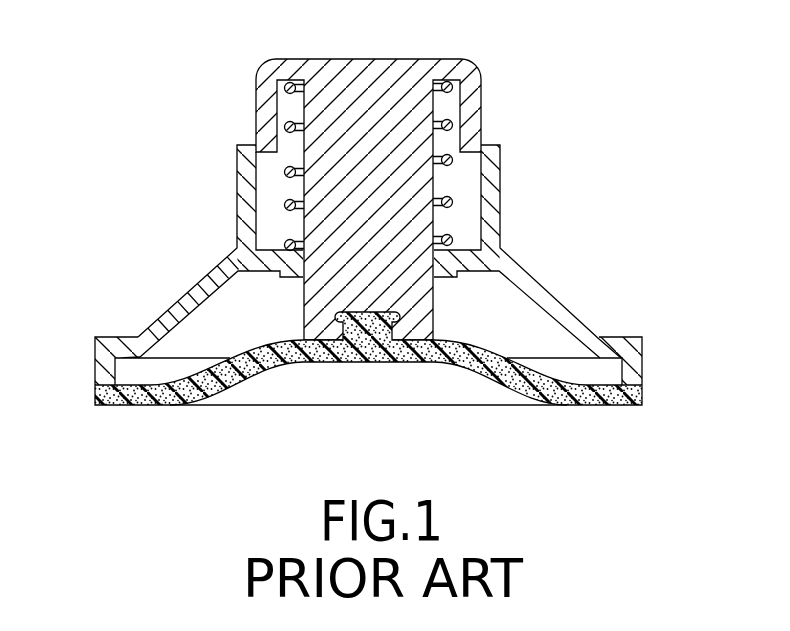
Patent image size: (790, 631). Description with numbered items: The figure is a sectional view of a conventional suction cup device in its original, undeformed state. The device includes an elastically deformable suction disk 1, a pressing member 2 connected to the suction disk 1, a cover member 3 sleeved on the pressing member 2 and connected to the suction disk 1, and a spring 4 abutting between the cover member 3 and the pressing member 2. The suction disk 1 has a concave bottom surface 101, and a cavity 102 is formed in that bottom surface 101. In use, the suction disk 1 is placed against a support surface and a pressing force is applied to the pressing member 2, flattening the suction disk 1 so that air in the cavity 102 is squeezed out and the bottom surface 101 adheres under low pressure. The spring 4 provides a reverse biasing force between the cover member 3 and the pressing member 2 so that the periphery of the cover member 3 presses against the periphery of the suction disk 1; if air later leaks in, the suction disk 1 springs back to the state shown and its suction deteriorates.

The suction disk 1 is at (565, 405).
The bottom surface 101 is at (599, 398).
The cavity 102 is at (428, 383).
The pressing member 2 is at (392, 73).
The cover member 3 is at (552, 306).
The spring 4 is at (452, 202).